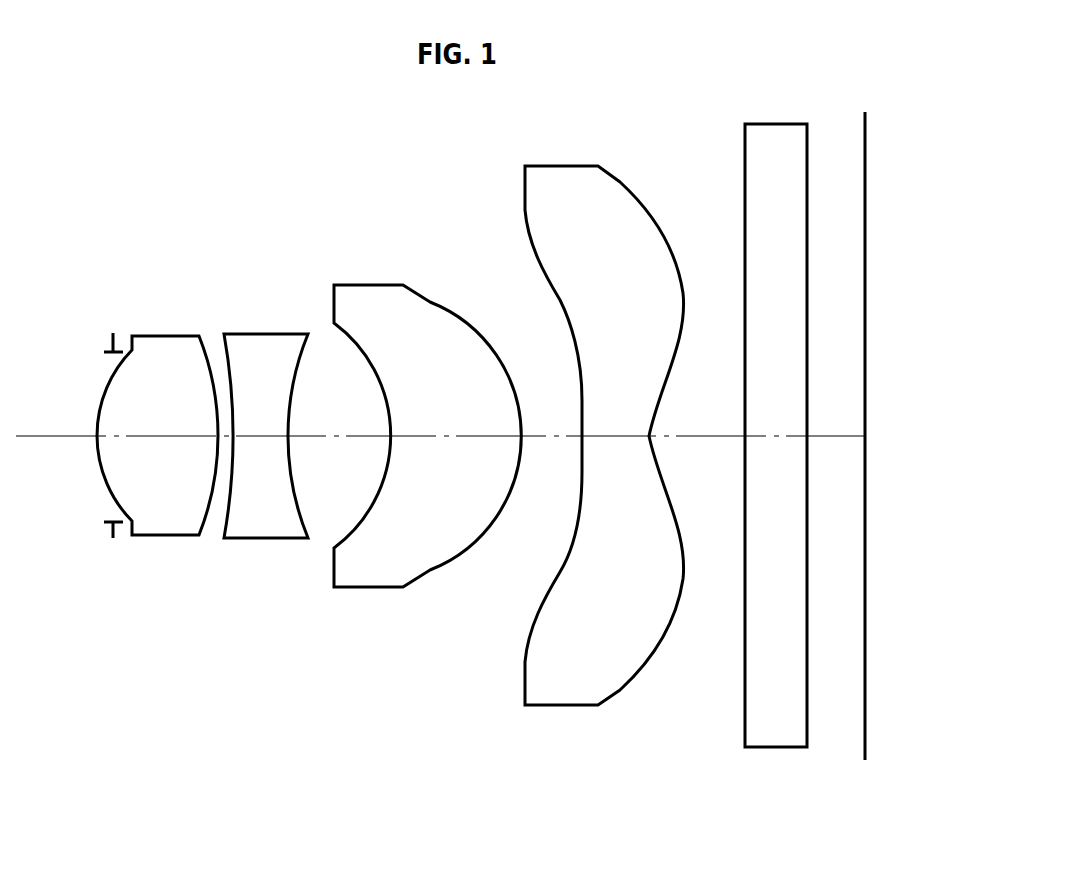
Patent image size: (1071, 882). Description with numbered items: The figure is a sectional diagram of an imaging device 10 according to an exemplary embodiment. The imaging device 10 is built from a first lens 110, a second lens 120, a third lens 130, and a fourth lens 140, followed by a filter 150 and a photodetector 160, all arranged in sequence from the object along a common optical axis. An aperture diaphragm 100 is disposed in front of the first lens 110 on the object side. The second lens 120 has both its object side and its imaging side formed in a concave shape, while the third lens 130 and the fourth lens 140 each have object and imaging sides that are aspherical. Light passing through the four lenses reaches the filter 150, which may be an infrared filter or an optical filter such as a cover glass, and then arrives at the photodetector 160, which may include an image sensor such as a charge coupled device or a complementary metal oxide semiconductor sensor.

The imaging device 10 is at (272, 175).
The aperture diaphragm 100 is at (113, 537).
The first lens 110 is at (168, 526).
The second lens 120 is at (265, 526).
The third lens 130 is at (368, 574).
The fourth lens 140 is at (557, 688).
The filter 150 is at (777, 734).
The photodetector 160 is at (866, 733).